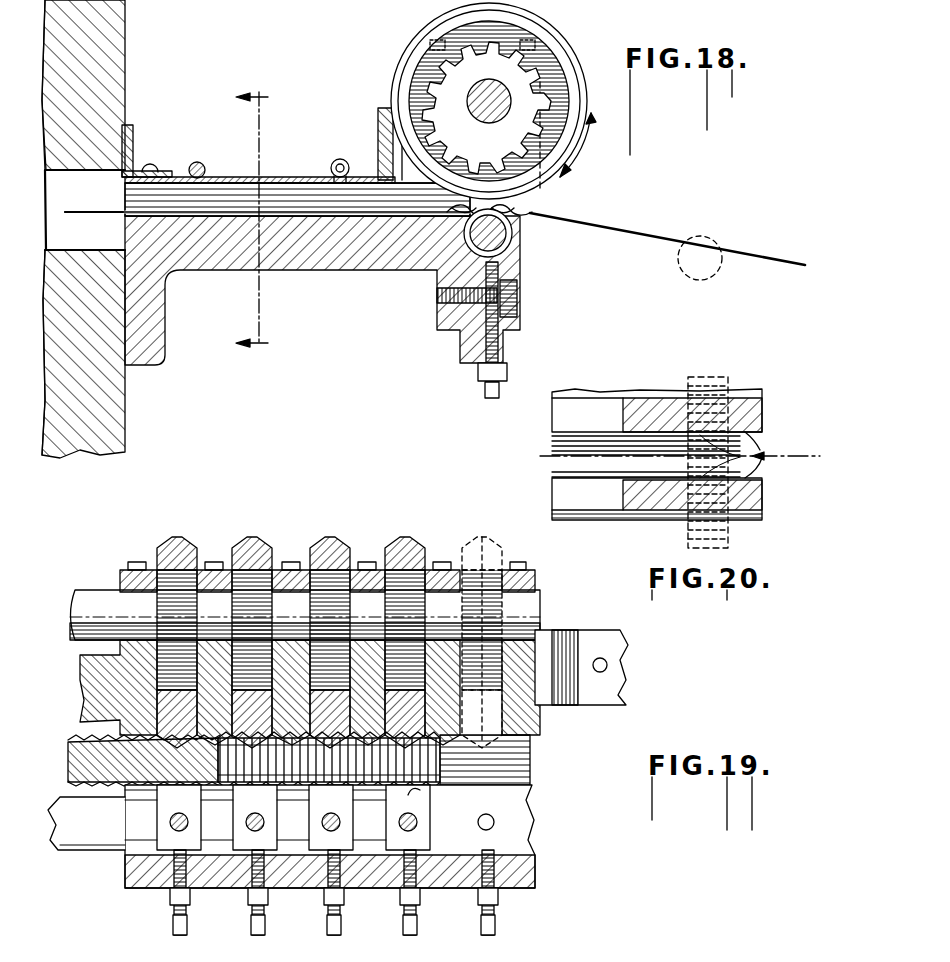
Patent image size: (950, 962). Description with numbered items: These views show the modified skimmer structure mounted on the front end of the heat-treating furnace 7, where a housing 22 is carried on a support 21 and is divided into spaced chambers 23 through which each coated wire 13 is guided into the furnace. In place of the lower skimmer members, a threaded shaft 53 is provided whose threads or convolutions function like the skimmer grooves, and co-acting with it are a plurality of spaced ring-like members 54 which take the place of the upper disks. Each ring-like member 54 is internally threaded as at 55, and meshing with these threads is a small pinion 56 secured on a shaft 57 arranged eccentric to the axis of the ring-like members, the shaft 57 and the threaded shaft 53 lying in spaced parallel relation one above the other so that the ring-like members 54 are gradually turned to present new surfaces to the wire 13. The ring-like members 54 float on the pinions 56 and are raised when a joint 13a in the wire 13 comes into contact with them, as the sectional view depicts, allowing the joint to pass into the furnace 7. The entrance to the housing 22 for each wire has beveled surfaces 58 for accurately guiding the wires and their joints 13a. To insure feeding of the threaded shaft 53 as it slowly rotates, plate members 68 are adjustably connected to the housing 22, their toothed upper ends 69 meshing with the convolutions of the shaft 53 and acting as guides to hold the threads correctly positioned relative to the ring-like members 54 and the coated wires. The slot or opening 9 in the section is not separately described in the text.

In FIG. 18, the furnace 7 is at (125, 415).
In FIG. 18, the slot opening 9 is at (85, 210).
In FIG. 18, the wire 13 is at (650, 228).
In FIG. 18, the joint 13a is at (535, 205).
In FIG. 18, the support 21 is at (256, 222).
In FIG. 18, the housing 22 is at (332, 272).
In FIG. 20, the housing 22 is at (612, 522).
In FIG. 19, the housing 22 is at (96, 832).
In FIG. 18, the chamber 23 is at (277, 208).
In FIG. 20, the chamber 23 is at (565, 465).
In FIG. 19, the chamber 23 is at (503, 745).
In FIG. 18, the threaded shaft 53 is at (504, 252).
In FIG. 20, the threaded shaft 53 is at (712, 378).
In FIG. 19, the threaded shaft 53 is at (72, 760).
In FIG. 18, the ring-like member 54 is at (422, 46).
In FIG. 19, the ring-like member 54 is at (186, 546).
In FIG. 18, the internal threads 55 is at (522, 135).
In FIG. 19, the internal threads 55 is at (145, 680).
In FIG. 19, the pinion 56 is at (156, 570).
In FIG. 18, the shaft 57 is at (497, 80).
In FIG. 19, the shaft 57 is at (80, 596).
In FIG. 18, the beveled surface 58 is at (514, 228).
In FIG. 20, the beveled surface 58 is at (760, 450).
In FIG. 18, the plate member 68 is at (500, 330).
In FIG. 19, the plate member 68 is at (172, 848).
In FIG. 18, the toothed upper end 69 is at (514, 295).
In FIG. 19, the toothed upper end 69 is at (412, 790).